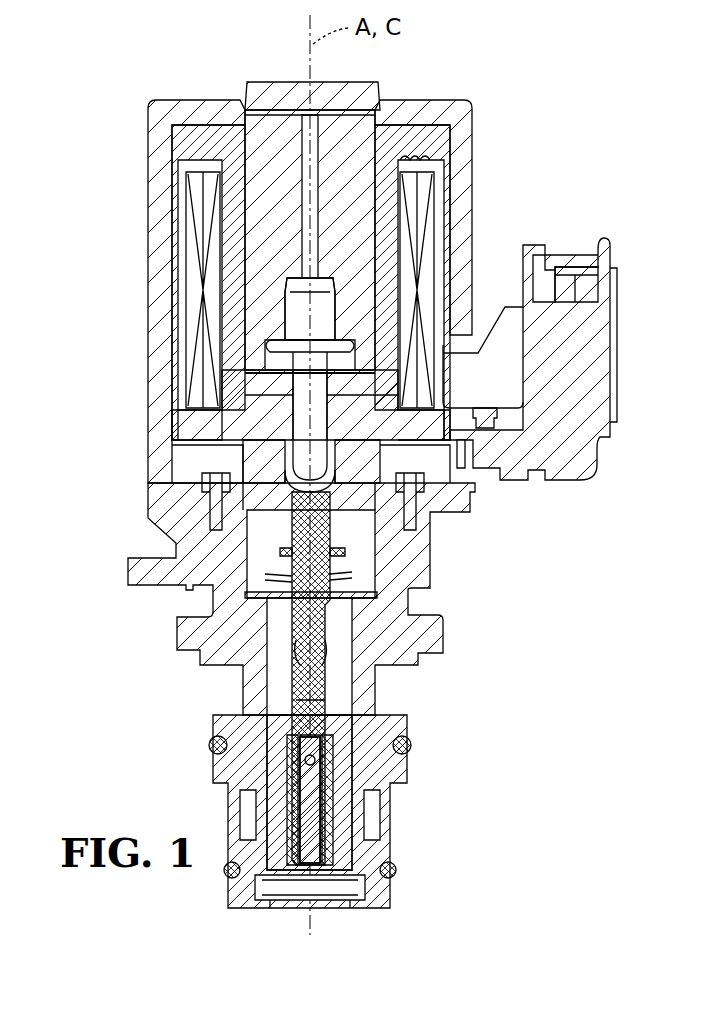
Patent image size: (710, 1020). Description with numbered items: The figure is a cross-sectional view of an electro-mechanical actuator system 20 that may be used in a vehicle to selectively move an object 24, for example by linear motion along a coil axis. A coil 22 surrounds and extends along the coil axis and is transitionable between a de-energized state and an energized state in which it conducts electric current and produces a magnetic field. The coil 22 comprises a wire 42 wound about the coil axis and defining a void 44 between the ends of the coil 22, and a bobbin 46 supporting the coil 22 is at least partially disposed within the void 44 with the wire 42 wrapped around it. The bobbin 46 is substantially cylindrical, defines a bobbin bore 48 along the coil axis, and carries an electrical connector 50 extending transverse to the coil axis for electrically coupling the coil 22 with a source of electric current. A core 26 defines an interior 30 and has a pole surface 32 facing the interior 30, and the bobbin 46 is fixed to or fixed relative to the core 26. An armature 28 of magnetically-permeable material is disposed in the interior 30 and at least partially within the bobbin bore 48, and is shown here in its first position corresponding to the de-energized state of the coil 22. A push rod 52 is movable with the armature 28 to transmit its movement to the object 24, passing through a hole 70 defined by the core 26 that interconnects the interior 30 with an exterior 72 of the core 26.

The electro-mechanical actuator system 20 is at (516, 99).
The coil 22 is at (476, 175).
The object 24 is at (315, 608).
The core 26 is at (345, 406).
The armature 28 is at (270, 145).
The interior 30 is at (250, 375).
The pole surface 32 is at (275, 355).
The wire 42 is at (205, 238).
The void 44 is at (394, 302).
The bobbin 46 is at (211, 163).
The bobbin bore 48 is at (384, 166).
The electrical connector 50 is at (588, 330).
The push rod 52 is at (372, 470).
The hole 70 is at (305, 410).
The exterior 72 is at (346, 536).